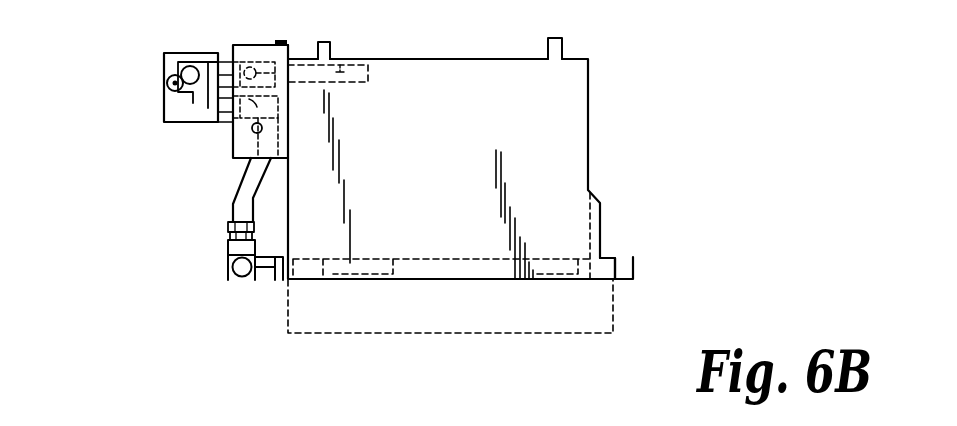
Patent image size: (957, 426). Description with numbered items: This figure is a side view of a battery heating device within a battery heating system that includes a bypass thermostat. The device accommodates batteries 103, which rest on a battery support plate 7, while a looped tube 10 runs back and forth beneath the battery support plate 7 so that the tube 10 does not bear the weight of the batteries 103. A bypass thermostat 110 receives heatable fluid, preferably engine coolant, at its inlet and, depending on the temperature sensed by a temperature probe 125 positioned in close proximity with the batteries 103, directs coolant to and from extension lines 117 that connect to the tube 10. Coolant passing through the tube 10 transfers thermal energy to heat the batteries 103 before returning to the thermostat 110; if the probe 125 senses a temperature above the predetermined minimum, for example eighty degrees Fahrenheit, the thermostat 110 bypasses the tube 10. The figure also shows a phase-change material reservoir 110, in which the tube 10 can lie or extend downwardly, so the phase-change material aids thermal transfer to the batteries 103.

The battery support plate 7 is at (633, 262).
The looped tube 10 is at (351, 272).
The battery 103 is at (574, 88).
The bypass thermostat 110 is at (144, 63).
The extension line 117 is at (243, 201).
The temperature probe 125 is at (345, 58).